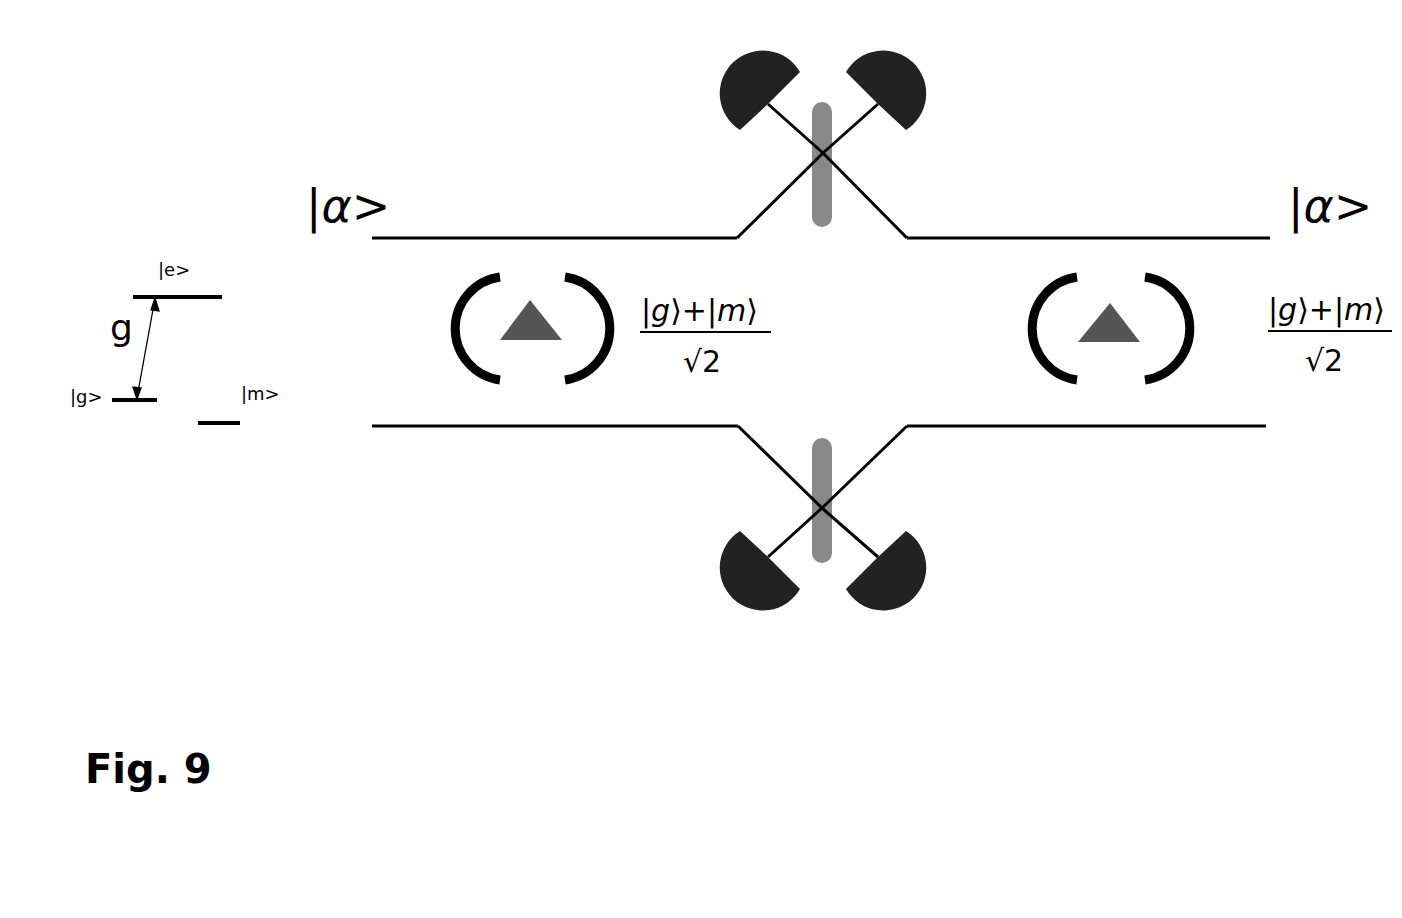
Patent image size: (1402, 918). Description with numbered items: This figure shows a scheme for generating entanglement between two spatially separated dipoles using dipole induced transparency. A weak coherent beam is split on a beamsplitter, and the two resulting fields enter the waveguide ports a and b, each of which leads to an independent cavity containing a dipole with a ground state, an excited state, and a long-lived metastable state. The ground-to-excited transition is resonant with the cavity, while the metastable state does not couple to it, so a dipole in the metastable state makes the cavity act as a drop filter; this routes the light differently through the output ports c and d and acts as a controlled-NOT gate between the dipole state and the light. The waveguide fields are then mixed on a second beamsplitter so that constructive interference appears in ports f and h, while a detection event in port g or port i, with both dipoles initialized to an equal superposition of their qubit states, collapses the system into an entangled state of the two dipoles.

The input port a is at (597, 195).
The input port b is at (597, 432).
The output port c is at (1046, 195).
The output port d is at (1044, 434).
The output port f is at (736, 90).
The output port g is at (916, 90).
The output port h is at (736, 570).
The output port i is at (906, 570).